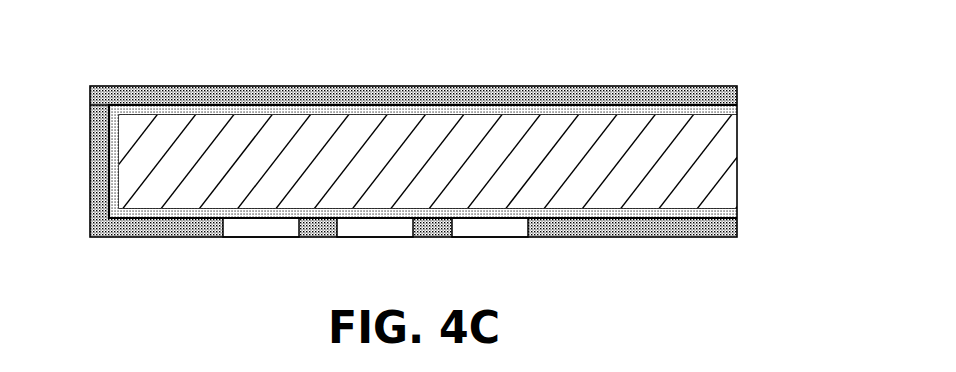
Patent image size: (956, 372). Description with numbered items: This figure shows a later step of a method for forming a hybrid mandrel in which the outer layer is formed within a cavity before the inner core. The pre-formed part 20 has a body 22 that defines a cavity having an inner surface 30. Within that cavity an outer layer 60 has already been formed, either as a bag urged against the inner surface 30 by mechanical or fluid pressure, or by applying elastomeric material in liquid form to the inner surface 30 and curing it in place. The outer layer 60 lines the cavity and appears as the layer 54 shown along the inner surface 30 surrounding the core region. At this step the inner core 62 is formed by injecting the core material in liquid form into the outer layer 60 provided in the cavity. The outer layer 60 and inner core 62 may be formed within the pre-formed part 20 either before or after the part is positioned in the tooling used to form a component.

The pre-formed part 20 is at (788, 97).
The body 22 is at (595, 225).
The inner surface 30 is at (125, 205).
The inner frame layer 54 is at (113, 147).
The outer layer 60 is at (603, 98).
The inner core 62 is at (722, 170).